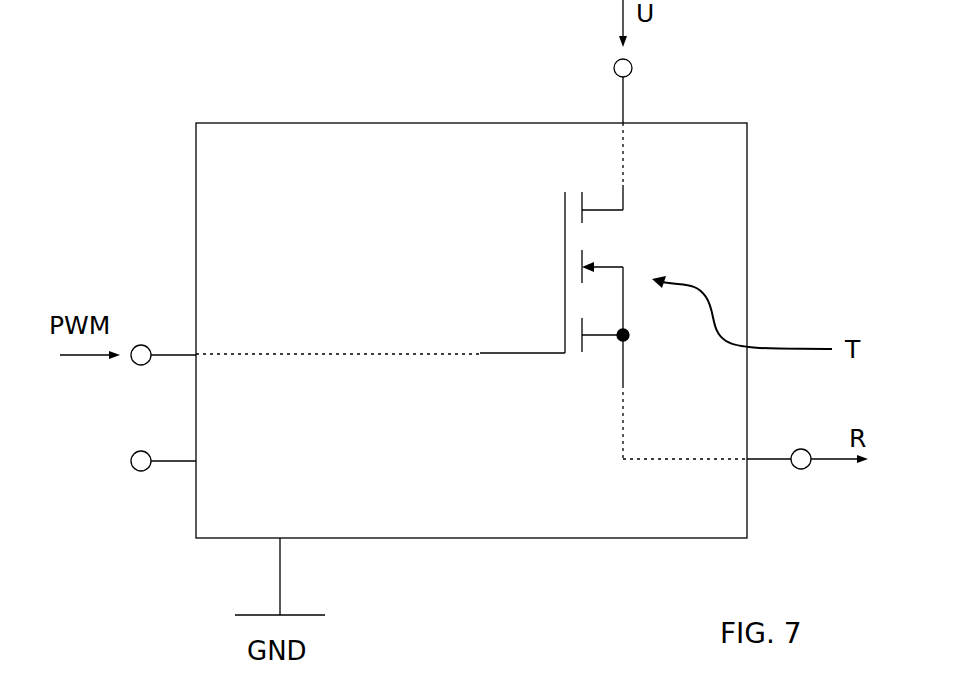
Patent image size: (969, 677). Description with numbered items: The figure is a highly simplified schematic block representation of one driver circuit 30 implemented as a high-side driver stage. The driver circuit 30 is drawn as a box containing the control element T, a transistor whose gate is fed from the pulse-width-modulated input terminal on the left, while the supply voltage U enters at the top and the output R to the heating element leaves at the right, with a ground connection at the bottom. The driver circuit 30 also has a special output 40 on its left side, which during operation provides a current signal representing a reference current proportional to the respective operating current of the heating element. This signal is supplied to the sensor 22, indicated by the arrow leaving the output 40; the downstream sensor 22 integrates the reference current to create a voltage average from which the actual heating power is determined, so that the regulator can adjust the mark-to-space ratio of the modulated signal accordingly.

The driver circuit 30 is at (371, 116).
The sensor 22 is at (131, 461).
The output 40 is at (134, 477).